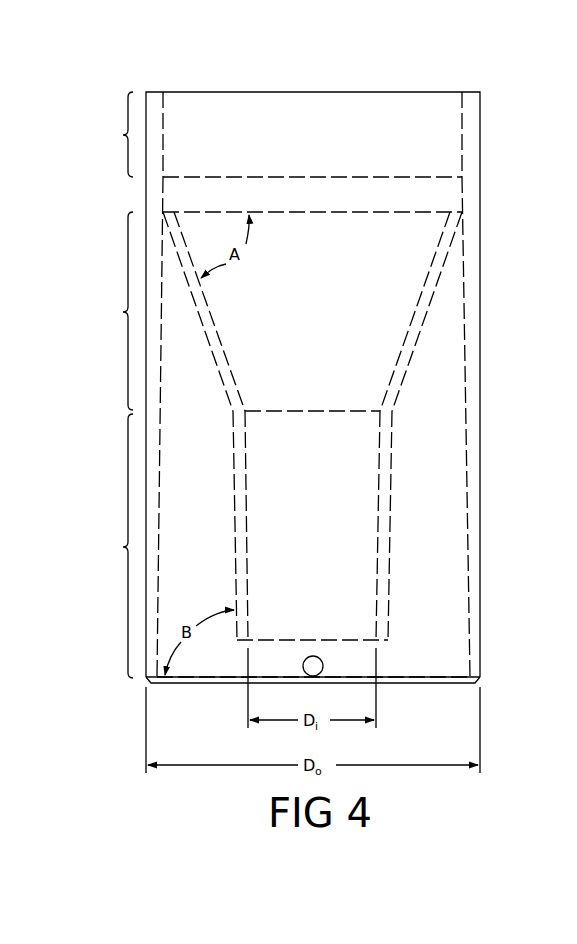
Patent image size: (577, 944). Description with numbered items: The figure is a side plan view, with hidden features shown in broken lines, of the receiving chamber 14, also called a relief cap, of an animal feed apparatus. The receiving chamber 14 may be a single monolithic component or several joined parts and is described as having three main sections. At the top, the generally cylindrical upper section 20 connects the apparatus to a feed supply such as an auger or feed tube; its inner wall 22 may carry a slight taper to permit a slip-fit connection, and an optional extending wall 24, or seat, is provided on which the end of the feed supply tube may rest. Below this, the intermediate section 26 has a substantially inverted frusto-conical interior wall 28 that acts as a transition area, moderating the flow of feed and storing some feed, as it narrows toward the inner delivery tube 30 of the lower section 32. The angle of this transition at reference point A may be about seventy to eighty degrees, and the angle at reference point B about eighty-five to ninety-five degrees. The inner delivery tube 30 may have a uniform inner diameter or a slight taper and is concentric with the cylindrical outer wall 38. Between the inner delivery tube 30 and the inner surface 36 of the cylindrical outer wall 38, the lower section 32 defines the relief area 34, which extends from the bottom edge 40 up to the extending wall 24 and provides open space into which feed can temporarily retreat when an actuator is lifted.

The receiving chamber 14 is at (502, 137).
The upper section 20 is at (110, 134).
The inner wall 22 is at (461, 125).
The extending wall 24 is at (447, 177).
The intermediate section 26 is at (275, 311).
The interior wall 28 is at (420, 318).
The inner delivery tube 30 is at (385, 530).
The lower section 32 is at (110, 546).
The relief area 34 is at (432, 493).
The inner surface 36 is at (470, 648).
The cylindrical outer wall 38 is at (478, 430).
The bottom edge 40 is at (500, 679).